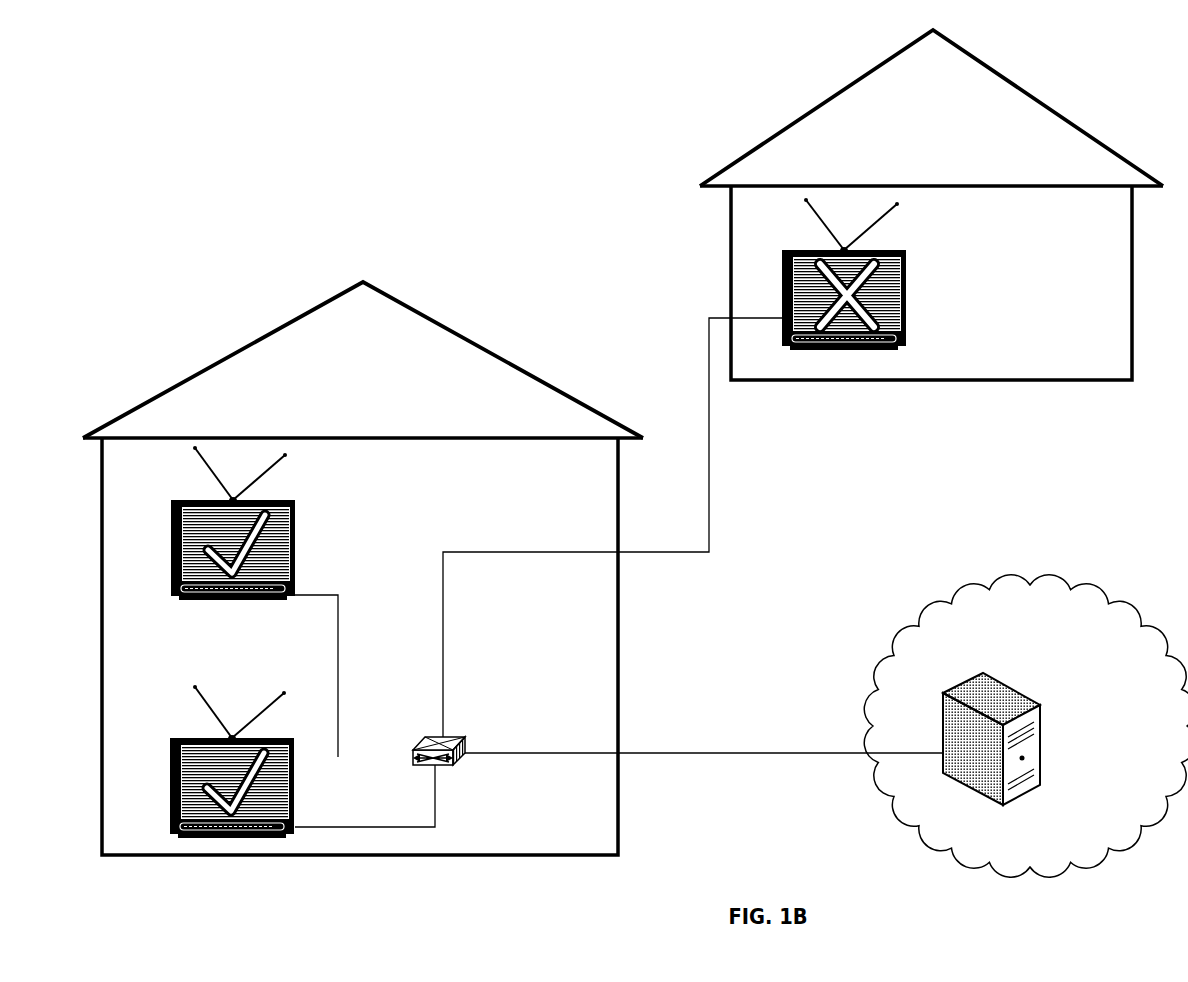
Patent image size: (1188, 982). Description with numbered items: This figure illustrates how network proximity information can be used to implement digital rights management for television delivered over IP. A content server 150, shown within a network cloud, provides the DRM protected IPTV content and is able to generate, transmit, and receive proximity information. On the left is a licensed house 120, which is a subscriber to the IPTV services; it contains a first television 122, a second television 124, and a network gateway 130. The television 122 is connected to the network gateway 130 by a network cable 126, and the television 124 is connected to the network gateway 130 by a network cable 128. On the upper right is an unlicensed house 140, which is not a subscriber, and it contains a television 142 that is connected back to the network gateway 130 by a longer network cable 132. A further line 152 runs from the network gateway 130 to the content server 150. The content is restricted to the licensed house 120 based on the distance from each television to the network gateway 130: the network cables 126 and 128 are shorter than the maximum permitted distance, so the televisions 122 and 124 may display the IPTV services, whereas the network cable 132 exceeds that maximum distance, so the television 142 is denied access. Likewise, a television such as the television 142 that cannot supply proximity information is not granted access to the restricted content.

The licensed house 120 is at (396, 300).
The television 122 is at (296, 502).
The television 124 is at (176, 740).
The network cable 126 is at (338, 630).
The network cable 128 is at (436, 810).
The network gateway 130 is at (461, 740).
The network cable 132 is at (709, 500).
The unlicensed house 140 is at (1010, 82).
The television 142 is at (907, 252).
The content server 150 is at (986, 672).
The connection line to server / network 152 is at (700, 753).